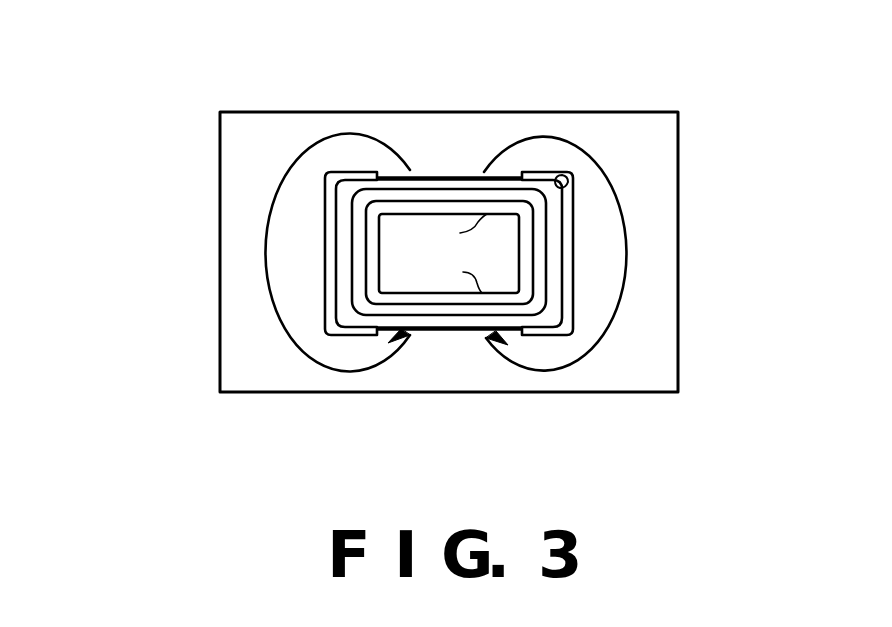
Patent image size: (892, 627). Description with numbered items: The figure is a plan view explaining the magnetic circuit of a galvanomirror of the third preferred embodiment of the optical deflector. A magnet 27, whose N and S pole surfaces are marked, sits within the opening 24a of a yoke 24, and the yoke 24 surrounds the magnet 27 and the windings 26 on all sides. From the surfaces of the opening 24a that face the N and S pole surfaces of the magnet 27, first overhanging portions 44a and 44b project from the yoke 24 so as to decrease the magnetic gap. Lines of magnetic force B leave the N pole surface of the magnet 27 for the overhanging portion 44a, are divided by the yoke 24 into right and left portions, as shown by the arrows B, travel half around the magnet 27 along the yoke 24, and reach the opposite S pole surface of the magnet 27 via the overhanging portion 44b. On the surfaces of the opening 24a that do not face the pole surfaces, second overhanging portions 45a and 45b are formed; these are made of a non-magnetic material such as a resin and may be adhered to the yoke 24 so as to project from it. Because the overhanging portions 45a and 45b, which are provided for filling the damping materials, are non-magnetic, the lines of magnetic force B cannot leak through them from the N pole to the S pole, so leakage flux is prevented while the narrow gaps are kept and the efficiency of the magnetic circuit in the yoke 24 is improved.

The yoke 24 is at (637, 130).
The opening of the yoke 24a is at (570, 180).
The coil 26 is at (420, 195).
The magnet 27 is at (415, 277).
The overhanging portion 44a is at (452, 176).
The overhanging portion 44b is at (465, 331).
The overhanging portion 45a is at (574, 233).
The overhanging portion 45b is at (325, 227).
The lines of magnetic force B is at (625, 287).